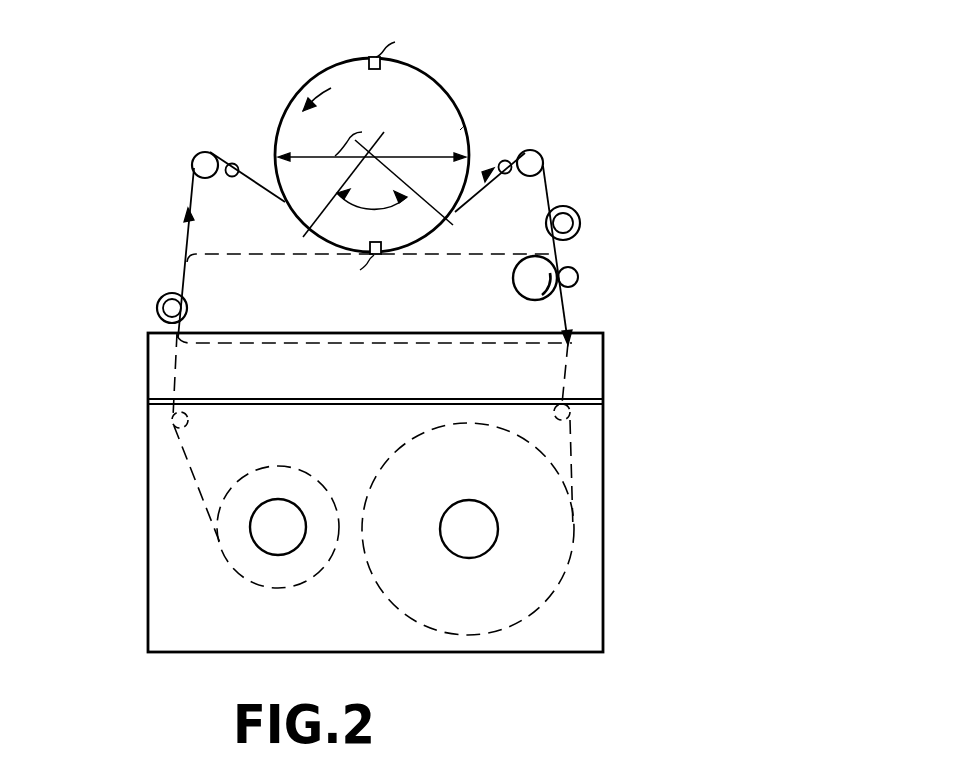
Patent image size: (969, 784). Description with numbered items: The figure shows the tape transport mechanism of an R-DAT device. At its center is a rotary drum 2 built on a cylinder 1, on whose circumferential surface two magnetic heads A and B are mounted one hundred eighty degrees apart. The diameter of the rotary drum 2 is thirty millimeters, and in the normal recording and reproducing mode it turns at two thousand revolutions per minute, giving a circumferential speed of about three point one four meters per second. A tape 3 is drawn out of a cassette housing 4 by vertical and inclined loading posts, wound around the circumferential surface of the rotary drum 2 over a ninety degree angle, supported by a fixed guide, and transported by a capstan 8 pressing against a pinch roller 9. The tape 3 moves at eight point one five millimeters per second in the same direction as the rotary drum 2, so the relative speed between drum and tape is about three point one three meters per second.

The cylinder 1 is at (447, 88).
The rotary drum 2 is at (465, 125).
The tape 3 is at (552, 192).
The cassette housing 4 is at (604, 558).
The capstan 8 is at (577, 282).
The pinch roller 9 is at (547, 297).